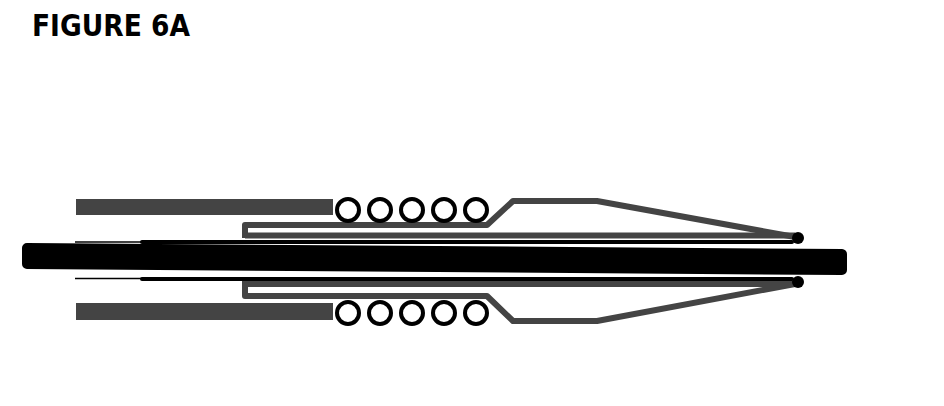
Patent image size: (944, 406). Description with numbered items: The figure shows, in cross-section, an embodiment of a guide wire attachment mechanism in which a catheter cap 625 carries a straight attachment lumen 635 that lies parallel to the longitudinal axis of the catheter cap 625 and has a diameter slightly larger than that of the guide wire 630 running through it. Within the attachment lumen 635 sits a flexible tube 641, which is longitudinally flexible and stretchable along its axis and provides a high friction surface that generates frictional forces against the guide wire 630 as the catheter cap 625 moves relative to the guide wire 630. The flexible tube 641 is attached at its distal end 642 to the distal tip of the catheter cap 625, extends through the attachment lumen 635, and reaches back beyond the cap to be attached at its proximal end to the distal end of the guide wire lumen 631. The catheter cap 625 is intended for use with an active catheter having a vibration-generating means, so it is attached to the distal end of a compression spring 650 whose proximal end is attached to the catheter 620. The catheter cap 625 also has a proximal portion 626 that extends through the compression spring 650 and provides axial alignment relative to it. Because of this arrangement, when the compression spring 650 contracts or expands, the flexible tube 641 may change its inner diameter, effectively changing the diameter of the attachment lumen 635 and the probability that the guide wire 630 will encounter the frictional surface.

The catheter 620 is at (181, 199).
The catheter cap 625 is at (622, 160).
The proximal portion 626 is at (288, 290).
The guide wire 630 is at (109, 246).
The guide wire lumen 631 is at (99, 283).
The attachment lumen 635 is at (510, 247).
The flexible tube 641 is at (694, 238).
The distal end 642 is at (799, 232).
The compression spring 650 is at (378, 203).